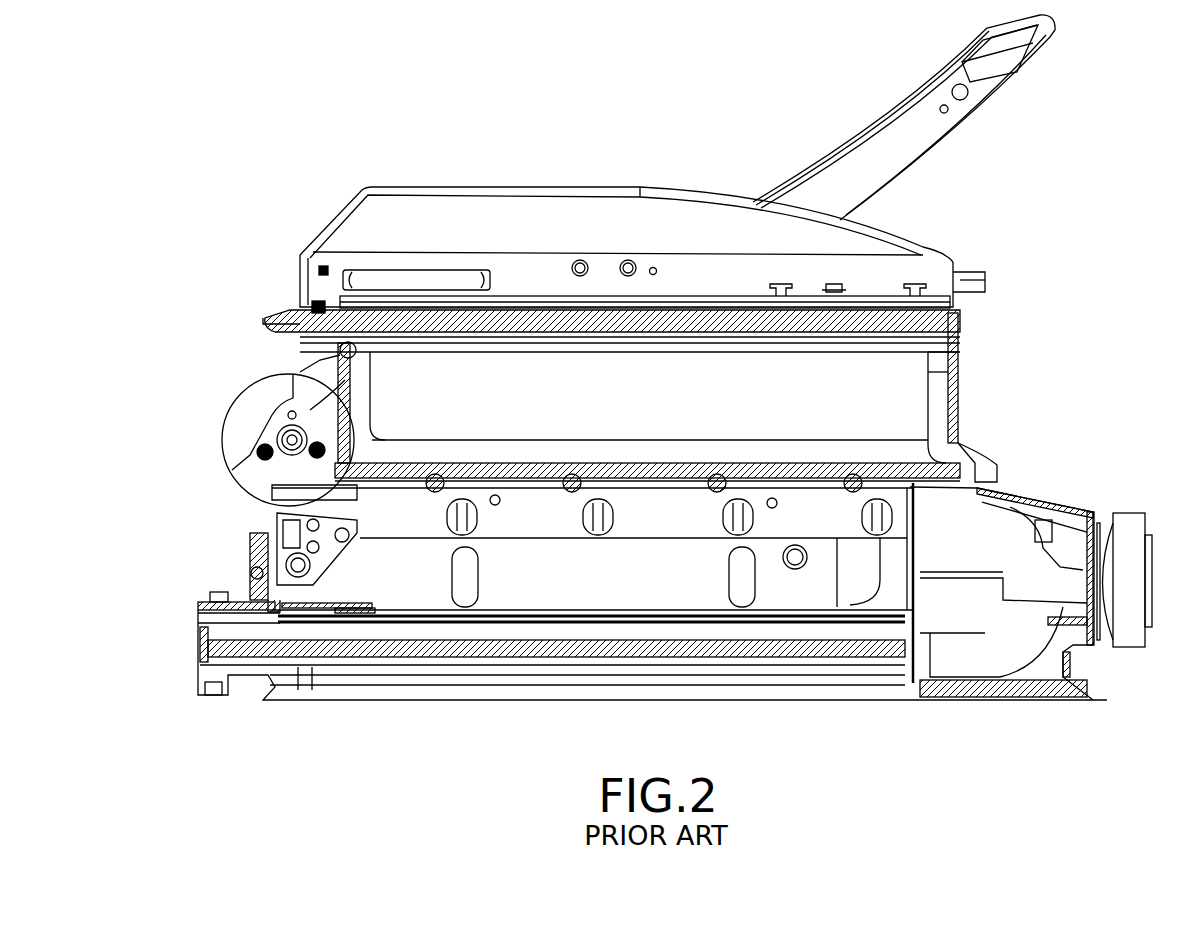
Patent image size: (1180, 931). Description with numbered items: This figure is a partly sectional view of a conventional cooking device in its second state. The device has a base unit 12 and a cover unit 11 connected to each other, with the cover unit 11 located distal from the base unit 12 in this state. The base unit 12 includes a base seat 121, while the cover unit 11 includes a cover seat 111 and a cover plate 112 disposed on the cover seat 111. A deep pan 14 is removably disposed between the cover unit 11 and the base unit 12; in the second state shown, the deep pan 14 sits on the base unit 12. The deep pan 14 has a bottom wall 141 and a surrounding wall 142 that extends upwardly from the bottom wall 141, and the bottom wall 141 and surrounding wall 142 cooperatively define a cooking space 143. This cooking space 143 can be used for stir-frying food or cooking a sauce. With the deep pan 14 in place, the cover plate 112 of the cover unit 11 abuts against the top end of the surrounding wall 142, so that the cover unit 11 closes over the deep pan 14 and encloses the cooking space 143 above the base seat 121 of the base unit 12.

The cover unit 11 is at (670, 160).
The cover seat 111 is at (436, 202).
The cover plate 112 is at (905, 343).
The base unit 12 is at (813, 717).
The base seat 121 is at (587, 567).
The deep pan 14 is at (908, 408).
The bottom wall 141 is at (422, 475).
The surrounding wall 142 is at (258, 384).
The cooking space 143 is at (705, 395).